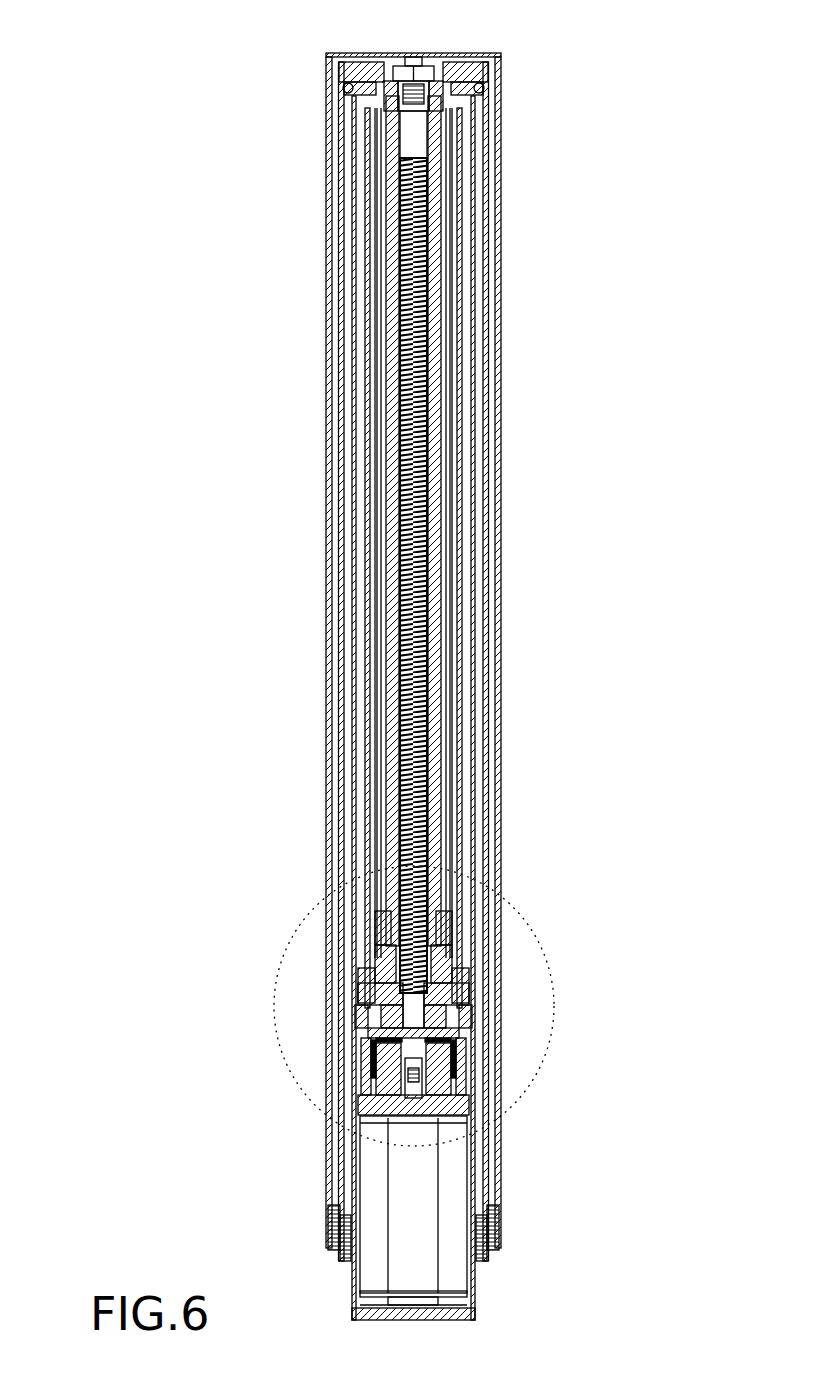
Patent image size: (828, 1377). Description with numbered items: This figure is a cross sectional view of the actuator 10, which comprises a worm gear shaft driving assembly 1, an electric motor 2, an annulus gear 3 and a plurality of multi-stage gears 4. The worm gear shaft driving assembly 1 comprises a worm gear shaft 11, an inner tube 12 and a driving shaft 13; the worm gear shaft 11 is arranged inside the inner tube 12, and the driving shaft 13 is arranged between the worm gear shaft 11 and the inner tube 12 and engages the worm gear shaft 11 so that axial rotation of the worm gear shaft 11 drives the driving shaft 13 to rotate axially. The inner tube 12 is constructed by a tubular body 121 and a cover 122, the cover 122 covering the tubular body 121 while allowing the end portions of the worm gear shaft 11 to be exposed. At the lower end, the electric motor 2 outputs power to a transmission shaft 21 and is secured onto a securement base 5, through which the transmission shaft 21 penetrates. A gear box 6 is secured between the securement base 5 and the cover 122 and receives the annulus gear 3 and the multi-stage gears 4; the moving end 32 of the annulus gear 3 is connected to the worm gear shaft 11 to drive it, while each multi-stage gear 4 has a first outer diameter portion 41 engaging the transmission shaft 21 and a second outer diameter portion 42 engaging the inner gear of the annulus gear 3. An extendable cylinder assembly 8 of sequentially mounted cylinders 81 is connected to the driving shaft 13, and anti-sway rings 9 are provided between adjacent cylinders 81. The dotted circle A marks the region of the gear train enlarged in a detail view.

The actuator 10 is at (258, 27).
The worm gear shaft driving assembly 1 is at (453, 533).
The driving shaft 13 is at (427, 404).
The worm gear shaft 11 is at (420, 456).
The inner tube 12 is at (576, 835).
The tubular body 121 is at (455, 798).
The cover 122 is at (457, 967).
The gear box 6 is at (463, 1025).
The moving end 32 is at (380, 1012).
The annulus gear 3 is at (465, 1043).
The multi-stage gears 4 is at (197, 1008).
The second outer diameter portion 42 is at (363, 1040).
The first outer diameter portion 41 is at (350, 1073).
The transmission shaft 21 is at (350, 1083).
The securement base 5 is at (343, 1102).
The electric motor 2 is at (397, 1188).
The extendable cylinder assembly 8 is at (590, 1092).
The cylinder 81 is at (478, 1090).
The anti-sway ring 9 is at (485, 1213).
The detail region A is at (547, 1003).